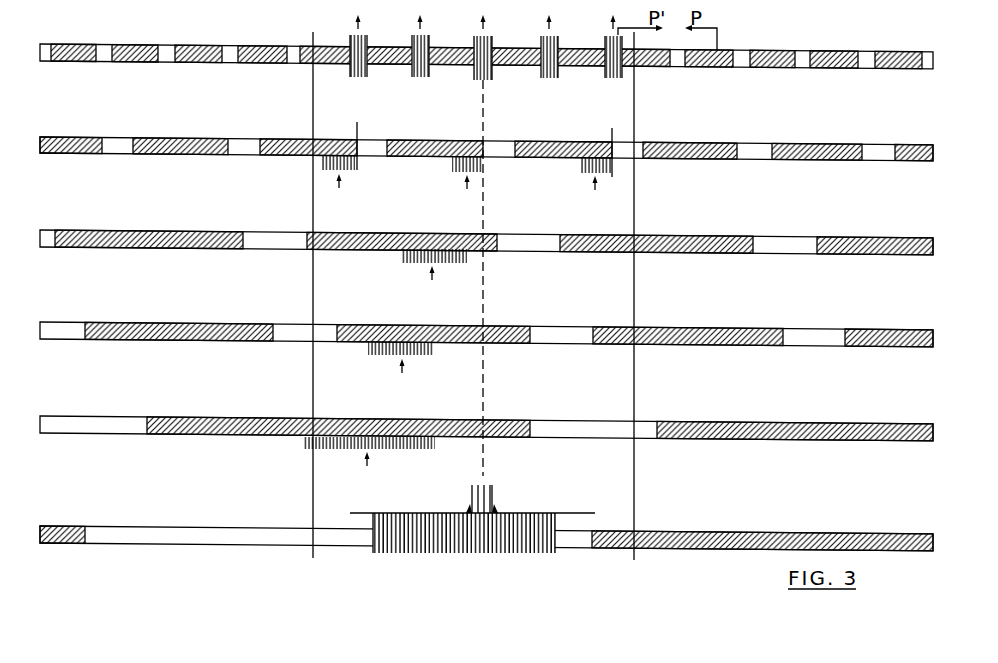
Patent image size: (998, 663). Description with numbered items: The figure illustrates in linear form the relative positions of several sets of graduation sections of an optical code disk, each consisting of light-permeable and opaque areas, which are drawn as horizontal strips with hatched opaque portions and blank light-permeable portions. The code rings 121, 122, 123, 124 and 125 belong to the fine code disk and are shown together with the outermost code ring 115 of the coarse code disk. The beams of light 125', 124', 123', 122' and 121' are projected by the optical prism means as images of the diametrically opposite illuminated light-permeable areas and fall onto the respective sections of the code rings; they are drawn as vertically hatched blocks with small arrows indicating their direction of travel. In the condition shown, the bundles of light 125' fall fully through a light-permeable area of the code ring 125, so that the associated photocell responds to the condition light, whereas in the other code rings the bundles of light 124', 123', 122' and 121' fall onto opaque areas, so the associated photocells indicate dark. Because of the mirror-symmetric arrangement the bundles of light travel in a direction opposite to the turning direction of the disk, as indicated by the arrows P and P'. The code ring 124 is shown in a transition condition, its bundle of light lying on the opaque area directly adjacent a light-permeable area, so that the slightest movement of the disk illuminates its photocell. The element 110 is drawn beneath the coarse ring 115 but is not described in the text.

The code ring 125 is at (509, 58).
The code ring 124 is at (509, 149).
The code ring 123 is at (509, 245).
The code ring 122 is at (509, 337).
The code ring 121 is at (509, 430).
The outermost code ring of the coarse code disk 115 is at (509, 540).
The actuating member 110 is at (493, 558).
The bundles of light 125' is at (486, 66).
The bundle of light 124' is at (467, 181).
The bundle of light 123' is at (464, 267).
The bundle of light 122' is at (448, 361).
The bundle of light 121' is at (416, 455).